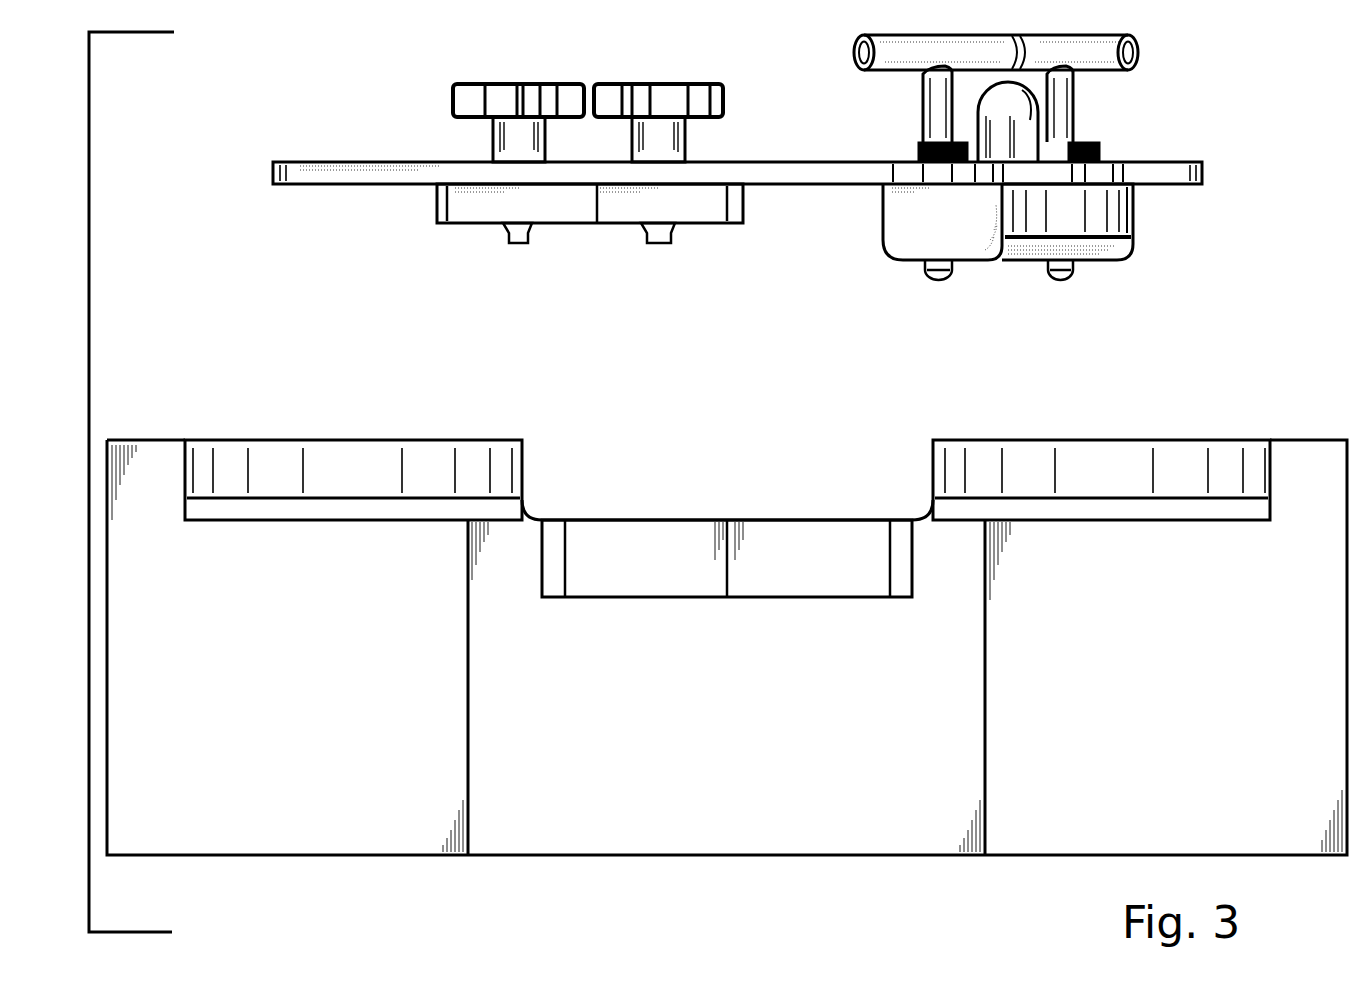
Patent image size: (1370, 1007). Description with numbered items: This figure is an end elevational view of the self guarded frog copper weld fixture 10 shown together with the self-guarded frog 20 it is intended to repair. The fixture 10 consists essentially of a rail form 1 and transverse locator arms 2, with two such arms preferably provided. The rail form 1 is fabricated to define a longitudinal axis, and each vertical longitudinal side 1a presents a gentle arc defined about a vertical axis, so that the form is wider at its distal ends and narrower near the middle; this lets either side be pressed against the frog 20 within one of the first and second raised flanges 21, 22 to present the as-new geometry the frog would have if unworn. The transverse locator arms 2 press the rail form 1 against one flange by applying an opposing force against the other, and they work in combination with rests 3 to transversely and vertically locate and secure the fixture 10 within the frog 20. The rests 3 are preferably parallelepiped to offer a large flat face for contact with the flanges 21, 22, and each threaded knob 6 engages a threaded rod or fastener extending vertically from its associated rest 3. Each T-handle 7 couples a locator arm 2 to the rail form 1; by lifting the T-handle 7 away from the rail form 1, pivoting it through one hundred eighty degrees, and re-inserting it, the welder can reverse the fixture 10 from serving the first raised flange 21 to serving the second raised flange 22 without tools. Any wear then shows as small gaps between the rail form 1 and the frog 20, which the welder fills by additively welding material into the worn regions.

The self guarded frog copper weld fixture 10 is at (413, 104).
The transverse locator arm 2 is at (771, 172).
The threaded knob 6 is at (550, 93).
The rest 3 is at (560, 216).
The T-handle 7 is at (922, 72).
The rail form 1 is at (897, 250).
The vertical longitudinal side 1a is at (1128, 224).
The self-guarded frog 20 is at (280, 857).
The first raised flange 21 is at (940, 478).
The second raised flange 22 is at (512, 478).